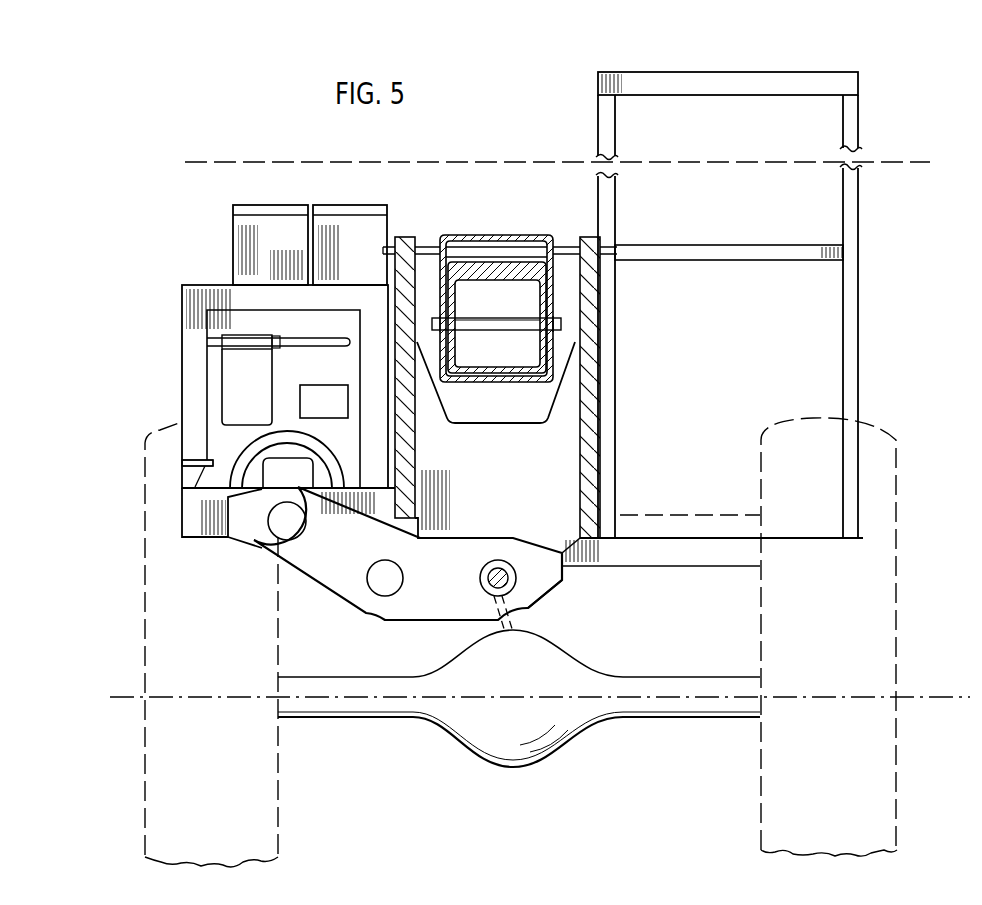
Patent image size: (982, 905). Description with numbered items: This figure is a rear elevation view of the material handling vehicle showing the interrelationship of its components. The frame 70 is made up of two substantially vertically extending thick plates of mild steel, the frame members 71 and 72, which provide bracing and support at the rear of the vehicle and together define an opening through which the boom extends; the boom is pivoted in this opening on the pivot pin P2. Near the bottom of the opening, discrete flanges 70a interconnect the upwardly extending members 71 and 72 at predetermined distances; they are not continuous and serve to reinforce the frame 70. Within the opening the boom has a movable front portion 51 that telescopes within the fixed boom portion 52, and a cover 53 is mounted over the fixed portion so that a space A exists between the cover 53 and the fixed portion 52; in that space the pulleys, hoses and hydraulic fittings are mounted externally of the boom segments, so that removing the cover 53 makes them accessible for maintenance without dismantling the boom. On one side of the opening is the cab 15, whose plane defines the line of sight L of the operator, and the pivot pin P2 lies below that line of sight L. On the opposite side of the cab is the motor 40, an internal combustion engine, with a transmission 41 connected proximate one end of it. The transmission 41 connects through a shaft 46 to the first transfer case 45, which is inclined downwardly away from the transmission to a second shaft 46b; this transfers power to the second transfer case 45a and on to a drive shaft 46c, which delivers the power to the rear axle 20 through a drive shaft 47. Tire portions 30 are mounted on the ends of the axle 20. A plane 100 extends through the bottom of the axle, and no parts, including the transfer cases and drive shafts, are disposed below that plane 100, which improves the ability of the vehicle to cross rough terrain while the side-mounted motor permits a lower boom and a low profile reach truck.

The cab 15 is at (752, 82).
The axle 20 is at (697, 708).
The tire portion 30 is at (870, 777).
The motor 40 is at (183, 328).
The transmission 41 is at (230, 445).
The first transfer case 45 is at (345, 582).
The second transfer case 45a is at (546, 623).
The shaft 46 is at (270, 528).
The second shaft 46b is at (380, 593).
The drive shaft 46c is at (478, 597).
The drive shaft 47 is at (520, 613).
The front boom portion 51 is at (460, 278).
The fixed boom portion 52 is at (492, 262).
The cover 53 is at (455, 255).
The frame 70 is at (607, 350).
The discrete flanges 70a is at (580, 405).
The vertically extending frame member 71 is at (590, 245).
The vertically extending frame member 72 is at (410, 237).
The plane 100 is at (516, 697).
The space A is at (488, 250).
The pivot pin P2 is at (568, 320).
The line of sight L is at (568, 163).